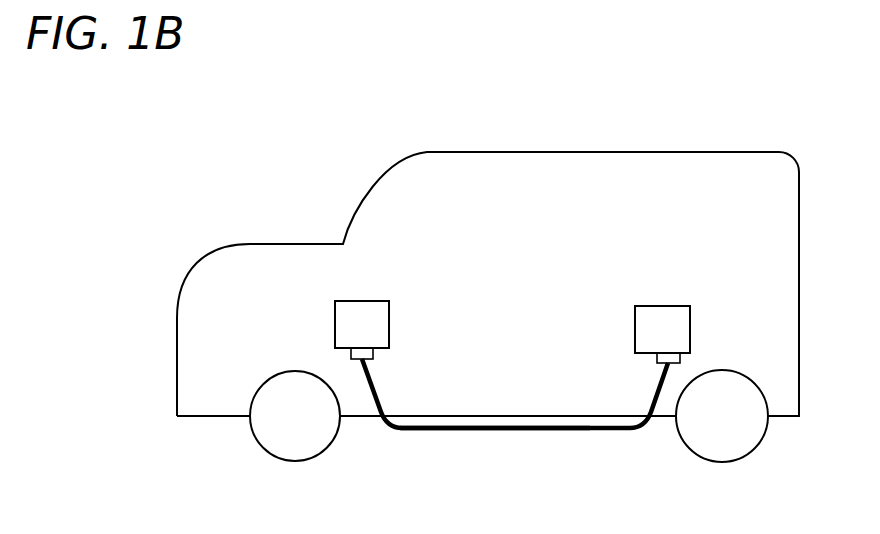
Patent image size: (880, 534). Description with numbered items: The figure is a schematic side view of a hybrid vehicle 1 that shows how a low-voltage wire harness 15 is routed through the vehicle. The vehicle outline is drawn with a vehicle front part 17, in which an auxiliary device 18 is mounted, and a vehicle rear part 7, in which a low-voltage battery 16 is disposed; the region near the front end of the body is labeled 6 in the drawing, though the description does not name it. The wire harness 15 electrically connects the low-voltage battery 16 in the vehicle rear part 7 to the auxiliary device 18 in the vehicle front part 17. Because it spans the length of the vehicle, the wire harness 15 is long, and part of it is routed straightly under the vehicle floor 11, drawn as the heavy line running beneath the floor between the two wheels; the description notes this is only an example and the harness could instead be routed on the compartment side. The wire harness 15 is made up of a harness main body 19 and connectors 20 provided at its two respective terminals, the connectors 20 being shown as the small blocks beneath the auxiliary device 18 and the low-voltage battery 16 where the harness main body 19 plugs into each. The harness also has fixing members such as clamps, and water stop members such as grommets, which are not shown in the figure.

The hybrid vehicle 1 is at (645, 150).
The front portion of vehicle 6 is at (193, 385).
The vehicle rear part 7 is at (778, 385).
The vehicle floor 11 is at (590, 431).
The wire harness 15 is at (421, 434).
The low-voltage battery 16 is at (663, 312).
The vehicle front part 17 is at (316, 258).
The auxiliary device 18 is at (376, 310).
The harness main body 19 is at (390, 403).
The connectors 20 is at (374, 355).